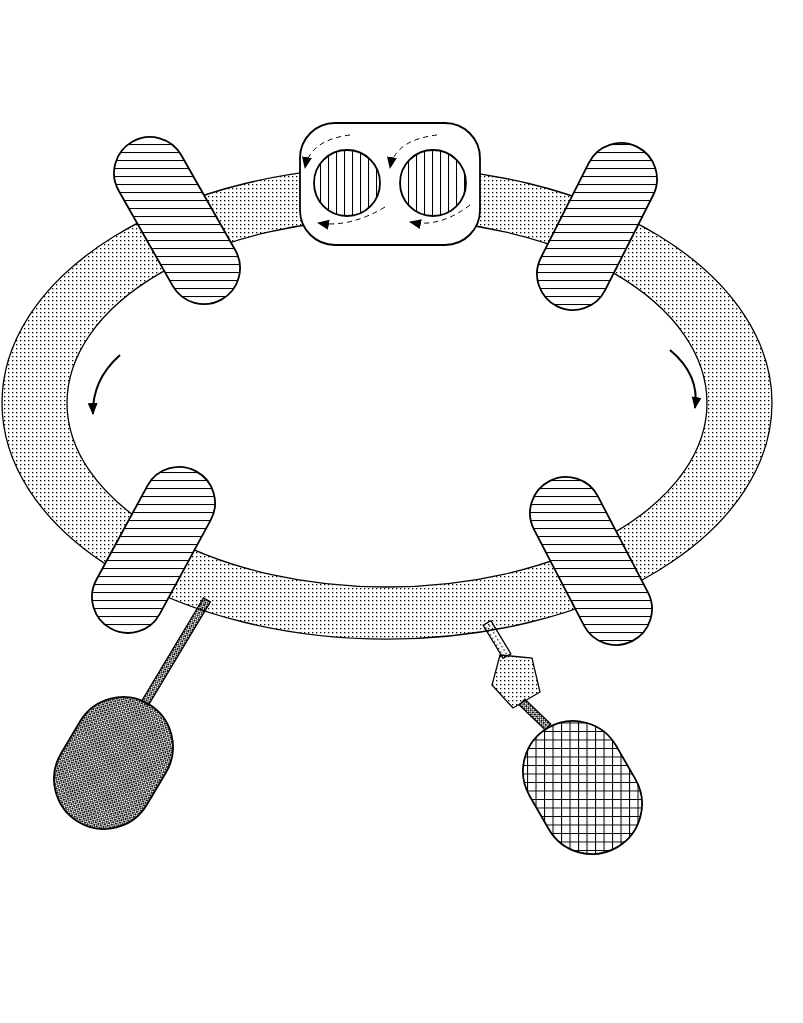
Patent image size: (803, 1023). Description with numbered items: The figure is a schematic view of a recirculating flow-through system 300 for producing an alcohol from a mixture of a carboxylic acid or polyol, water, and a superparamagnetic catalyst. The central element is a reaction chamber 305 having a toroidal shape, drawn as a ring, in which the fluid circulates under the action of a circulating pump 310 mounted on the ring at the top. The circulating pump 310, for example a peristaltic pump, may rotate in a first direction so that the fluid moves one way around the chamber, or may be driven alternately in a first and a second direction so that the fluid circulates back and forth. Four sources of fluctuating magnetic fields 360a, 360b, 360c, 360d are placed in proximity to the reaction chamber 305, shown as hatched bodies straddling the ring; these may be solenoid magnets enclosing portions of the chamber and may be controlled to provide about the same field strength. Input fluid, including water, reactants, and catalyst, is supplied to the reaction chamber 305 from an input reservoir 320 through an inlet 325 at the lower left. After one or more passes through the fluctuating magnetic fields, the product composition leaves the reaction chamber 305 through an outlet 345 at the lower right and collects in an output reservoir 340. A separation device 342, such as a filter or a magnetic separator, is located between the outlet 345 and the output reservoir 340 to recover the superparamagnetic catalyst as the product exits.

The recirculating flow-through system 300 is at (80, 125).
The reaction chamber 305 is at (88, 245).
The circulating pump 310 is at (463, 120).
The input reservoir 320 is at (170, 780).
The inlet 325 is at (195, 675).
The output reservoir 340 is at (525, 803).
The separation device 342 is at (550, 672).
The outlet 345 is at (482, 655).
The source of fluctuating magnetic field 360a is at (658, 633).
The source of fluctuating magnetic field 360b is at (670, 160).
The source of fluctuating magnetic field 360c is at (170, 130).
The source of fluctuating magnetic field 360d is at (87, 620).